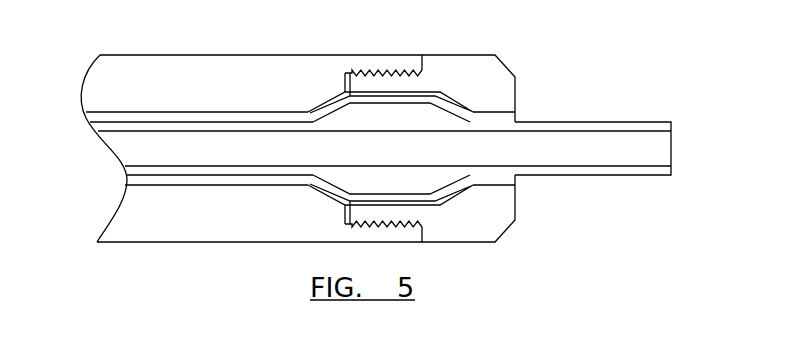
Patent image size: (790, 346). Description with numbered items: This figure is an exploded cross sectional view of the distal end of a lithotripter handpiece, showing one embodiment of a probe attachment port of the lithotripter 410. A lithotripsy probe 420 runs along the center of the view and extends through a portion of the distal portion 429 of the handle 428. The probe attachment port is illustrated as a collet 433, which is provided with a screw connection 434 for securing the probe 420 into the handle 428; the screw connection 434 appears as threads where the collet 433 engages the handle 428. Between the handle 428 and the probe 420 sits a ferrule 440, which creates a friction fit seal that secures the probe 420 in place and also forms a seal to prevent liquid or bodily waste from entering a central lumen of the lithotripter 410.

The lithotripter 410 is at (634, 63).
The lithotripsy probe 420 is at (600, 170).
The handle 428 is at (283, 78).
The distal portion 429 is at (478, 220).
The collet 433 is at (478, 82).
The screw connection 434 is at (377, 225).
The ferrule 440 is at (425, 100).